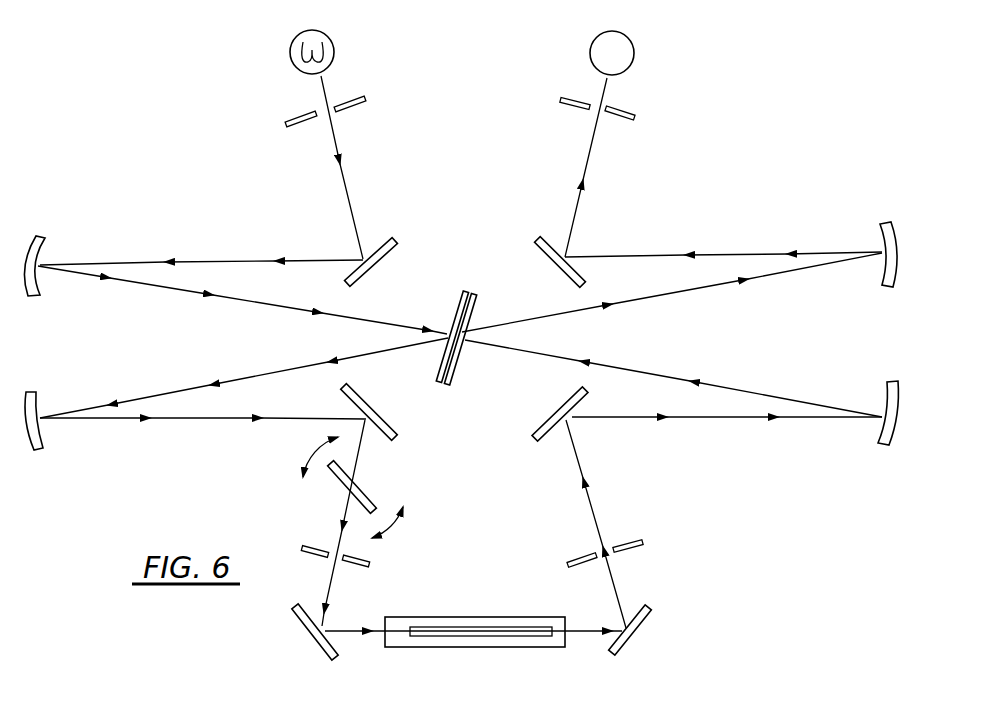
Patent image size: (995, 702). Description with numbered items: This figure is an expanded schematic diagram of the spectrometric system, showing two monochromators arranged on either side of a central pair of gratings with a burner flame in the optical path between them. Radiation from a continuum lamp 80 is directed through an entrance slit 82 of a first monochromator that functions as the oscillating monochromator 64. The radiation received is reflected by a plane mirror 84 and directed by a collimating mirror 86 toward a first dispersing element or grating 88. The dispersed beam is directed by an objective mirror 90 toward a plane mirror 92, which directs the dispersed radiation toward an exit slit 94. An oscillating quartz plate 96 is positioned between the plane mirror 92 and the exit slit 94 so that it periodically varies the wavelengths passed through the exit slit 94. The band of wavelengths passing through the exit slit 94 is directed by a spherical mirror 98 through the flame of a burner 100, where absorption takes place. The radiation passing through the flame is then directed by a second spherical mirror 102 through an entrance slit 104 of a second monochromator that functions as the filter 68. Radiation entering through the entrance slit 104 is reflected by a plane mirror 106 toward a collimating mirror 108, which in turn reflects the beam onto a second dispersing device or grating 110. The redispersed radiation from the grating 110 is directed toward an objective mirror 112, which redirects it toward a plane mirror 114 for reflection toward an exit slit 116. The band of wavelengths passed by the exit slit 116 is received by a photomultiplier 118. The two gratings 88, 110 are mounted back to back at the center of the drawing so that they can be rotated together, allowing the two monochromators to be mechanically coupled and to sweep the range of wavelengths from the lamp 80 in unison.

The oscillating monochromator 64 is at (137, 354).
The filter 68 is at (768, 344).
The continuum lamp 80 is at (336, 51).
The entrance slit 82 is at (366, 98).
The plane mirror 84 is at (383, 237).
The collimating mirror 86 is at (45, 246).
The first dispersing element or grating 88 is at (459, 302).
The objective mirror 90 is at (43, 447).
The plane mirror 92 is at (367, 400).
The exit slit 94 is at (367, 558).
The oscillating quartz plate 96 is at (372, 494).
The spherical mirror 98 is at (328, 634).
The burner 100 is at (442, 614).
The spherical mirror 102 is at (645, 610).
The entrance slit 104 is at (628, 540).
The plane mirror 106 is at (558, 414).
The collimating mirror 108 is at (883, 385).
The second dispersing device or grating 110 is at (478, 305).
The objective mirror 112 is at (880, 229).
The plane mirror 114 is at (550, 238).
The exit slit 116 is at (628, 111).
The photomultiplier 118 is at (635, 53).